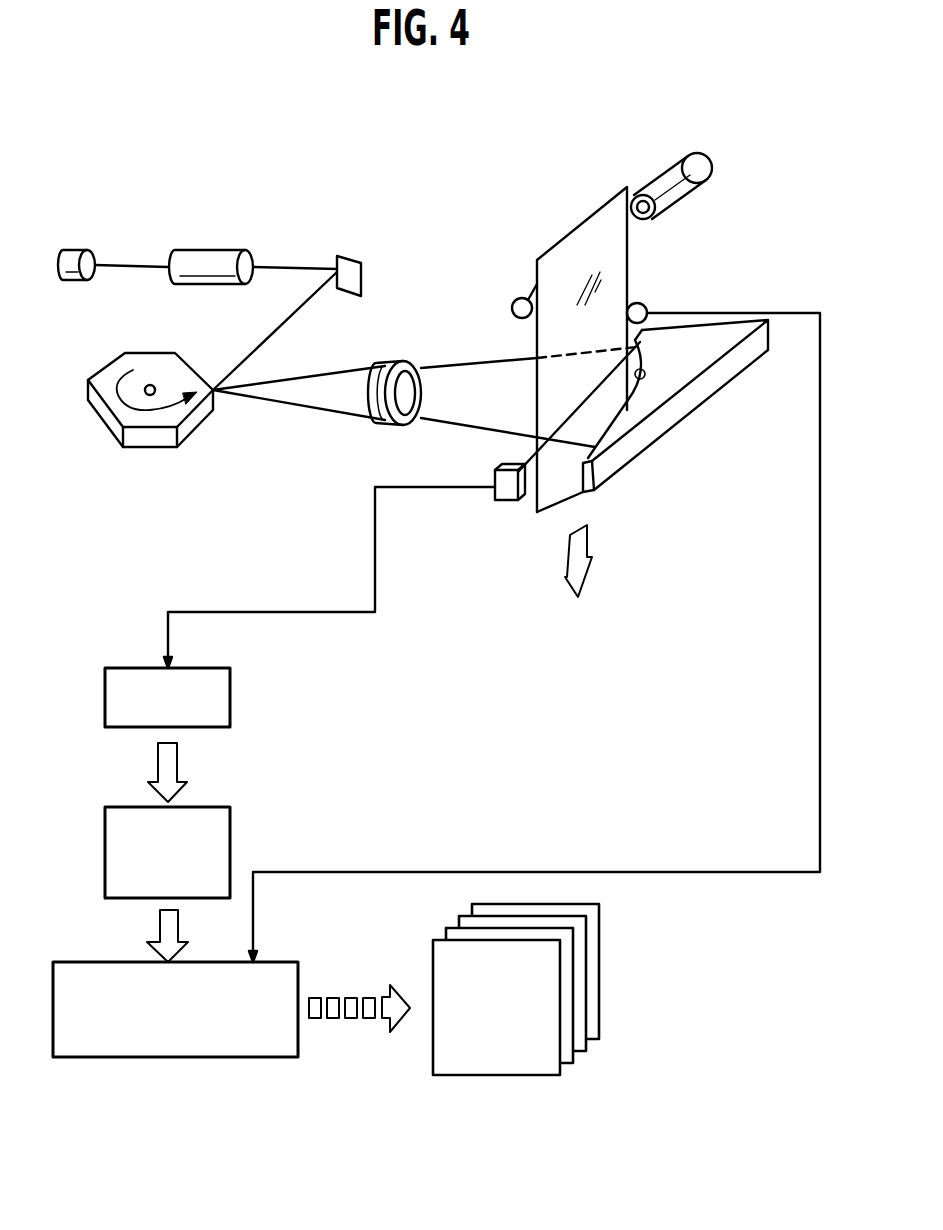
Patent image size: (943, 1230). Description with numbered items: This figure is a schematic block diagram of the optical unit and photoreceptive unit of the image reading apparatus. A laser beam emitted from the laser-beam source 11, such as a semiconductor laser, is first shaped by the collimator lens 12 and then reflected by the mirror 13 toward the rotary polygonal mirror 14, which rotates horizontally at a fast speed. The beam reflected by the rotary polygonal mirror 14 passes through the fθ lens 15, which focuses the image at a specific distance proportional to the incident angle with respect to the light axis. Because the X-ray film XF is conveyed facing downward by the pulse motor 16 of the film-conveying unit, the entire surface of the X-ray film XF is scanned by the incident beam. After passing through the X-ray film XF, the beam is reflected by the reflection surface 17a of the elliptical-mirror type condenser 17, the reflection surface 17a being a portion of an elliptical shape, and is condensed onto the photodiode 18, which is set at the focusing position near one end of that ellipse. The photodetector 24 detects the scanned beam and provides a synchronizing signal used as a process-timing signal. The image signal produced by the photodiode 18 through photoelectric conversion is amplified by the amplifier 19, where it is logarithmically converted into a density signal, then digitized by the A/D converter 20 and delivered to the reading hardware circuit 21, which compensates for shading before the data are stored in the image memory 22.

The laser-beam source 11 is at (72, 248).
The collimator lens 12 is at (206, 248).
The mirror 13 is at (350, 255).
The rotary polygonal mirror 14 is at (95, 413).
The fθ lens 15 is at (389, 356).
The X-ray film XF is at (560, 258).
The pulse motor 16 is at (681, 153).
The photodetector 24 is at (647, 305).
The elliptical-mirror type condenser 17 is at (725, 372).
The reflection surface 17a is at (645, 372).
The photodiode 18 is at (495, 477).
The amplifier 19 is at (207, 668).
The A/D converter 20 is at (207, 807).
The reading hardware circuit 21 is at (273, 962).
The image memory 22 is at (590, 952).